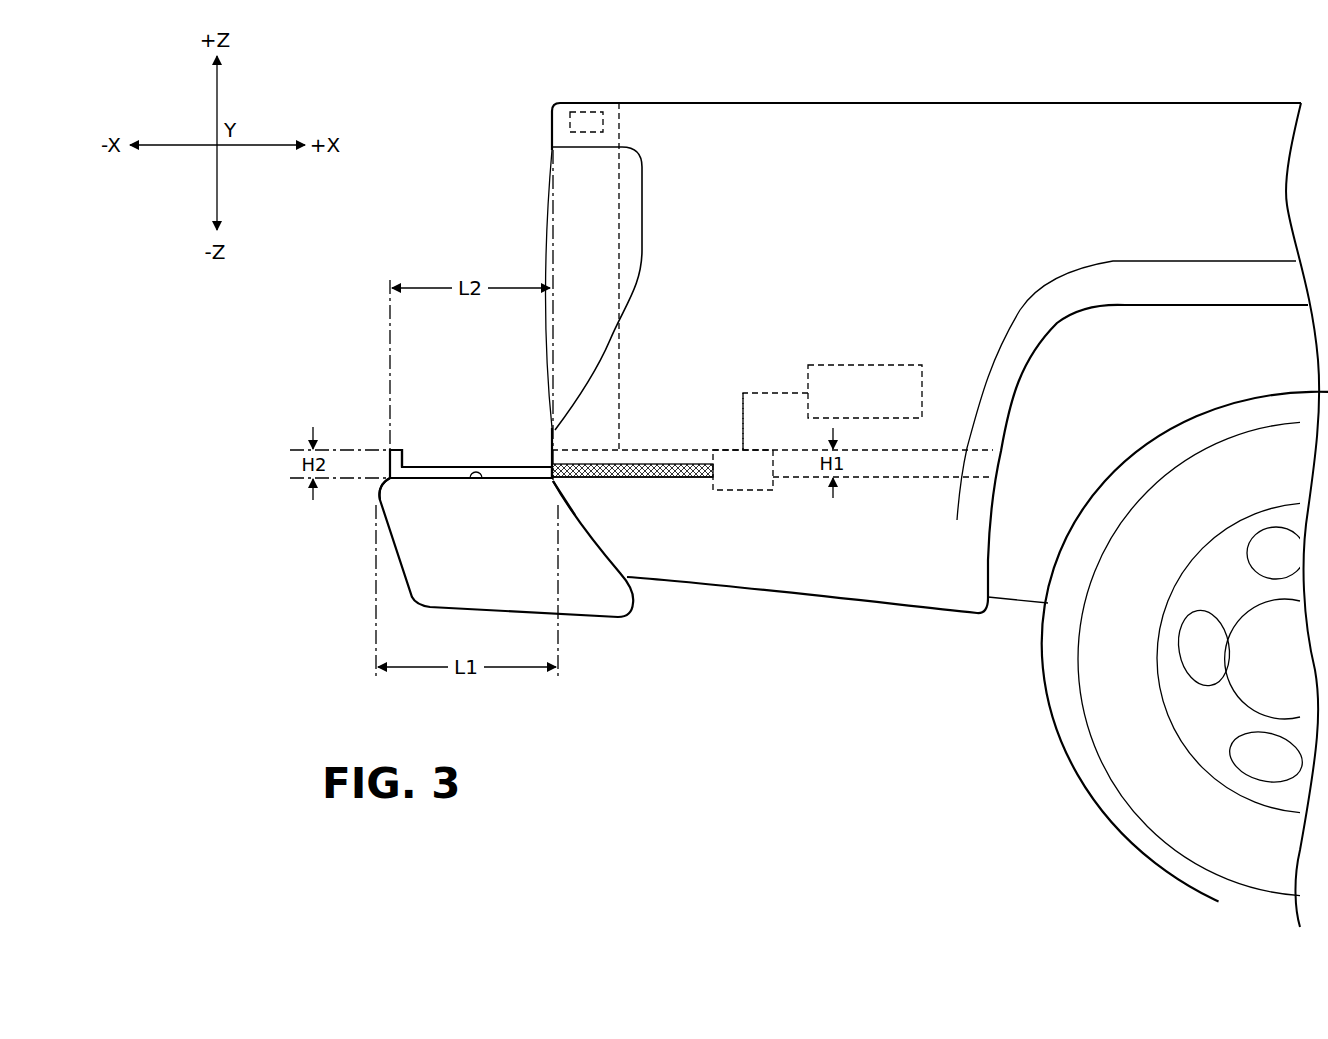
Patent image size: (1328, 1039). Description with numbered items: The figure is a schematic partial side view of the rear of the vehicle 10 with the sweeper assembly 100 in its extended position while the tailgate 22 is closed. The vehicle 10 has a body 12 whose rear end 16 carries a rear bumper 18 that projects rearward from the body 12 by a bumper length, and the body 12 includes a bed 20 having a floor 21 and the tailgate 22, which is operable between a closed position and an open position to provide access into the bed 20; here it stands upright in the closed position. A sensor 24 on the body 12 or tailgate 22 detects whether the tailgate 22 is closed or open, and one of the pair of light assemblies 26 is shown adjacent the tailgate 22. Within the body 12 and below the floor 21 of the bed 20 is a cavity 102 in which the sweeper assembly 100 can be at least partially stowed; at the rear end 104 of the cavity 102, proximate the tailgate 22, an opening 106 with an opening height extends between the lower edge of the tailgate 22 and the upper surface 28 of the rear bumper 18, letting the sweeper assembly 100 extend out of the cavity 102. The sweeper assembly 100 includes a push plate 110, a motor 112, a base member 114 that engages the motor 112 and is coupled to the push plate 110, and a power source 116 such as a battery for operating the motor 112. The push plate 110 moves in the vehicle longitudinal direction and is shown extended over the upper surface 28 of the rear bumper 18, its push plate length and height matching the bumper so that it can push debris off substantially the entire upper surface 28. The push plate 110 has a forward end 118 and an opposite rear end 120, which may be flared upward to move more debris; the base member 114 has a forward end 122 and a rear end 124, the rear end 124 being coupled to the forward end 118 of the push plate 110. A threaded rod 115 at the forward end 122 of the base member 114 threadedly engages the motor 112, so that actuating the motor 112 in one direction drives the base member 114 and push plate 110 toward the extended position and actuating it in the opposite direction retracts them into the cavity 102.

The vehicle 10 is at (901, 655).
The body 12 is at (777, 658).
The rear end 16 is at (552, 128).
The rear bumper 18 is at (385, 540).
The bed 20 is at (917, 78).
The floor 21 is at (935, 450).
The tailgate 22 is at (620, 128).
The sensor 24 is at (585, 112).
The light assemblies 26 is at (642, 210).
The upper surface 28 is at (476, 482).
The sweeper assembly 100 is at (437, 445).
The cavity 102 is at (897, 468).
The rear end 104 is at (552, 462).
The opening 106 is at (530, 460).
The push plate 110 is at (425, 440).
The motor 112 is at (755, 490).
The base member 114 is at (636, 480).
The threaded rod 115 is at (637, 450).
The power source 116 is at (865, 382).
The forward end 118 is at (550, 482).
The rear end 120 is at (388, 481).
The forward end 122 is at (711, 470).
The rear end 124 is at (583, 479).